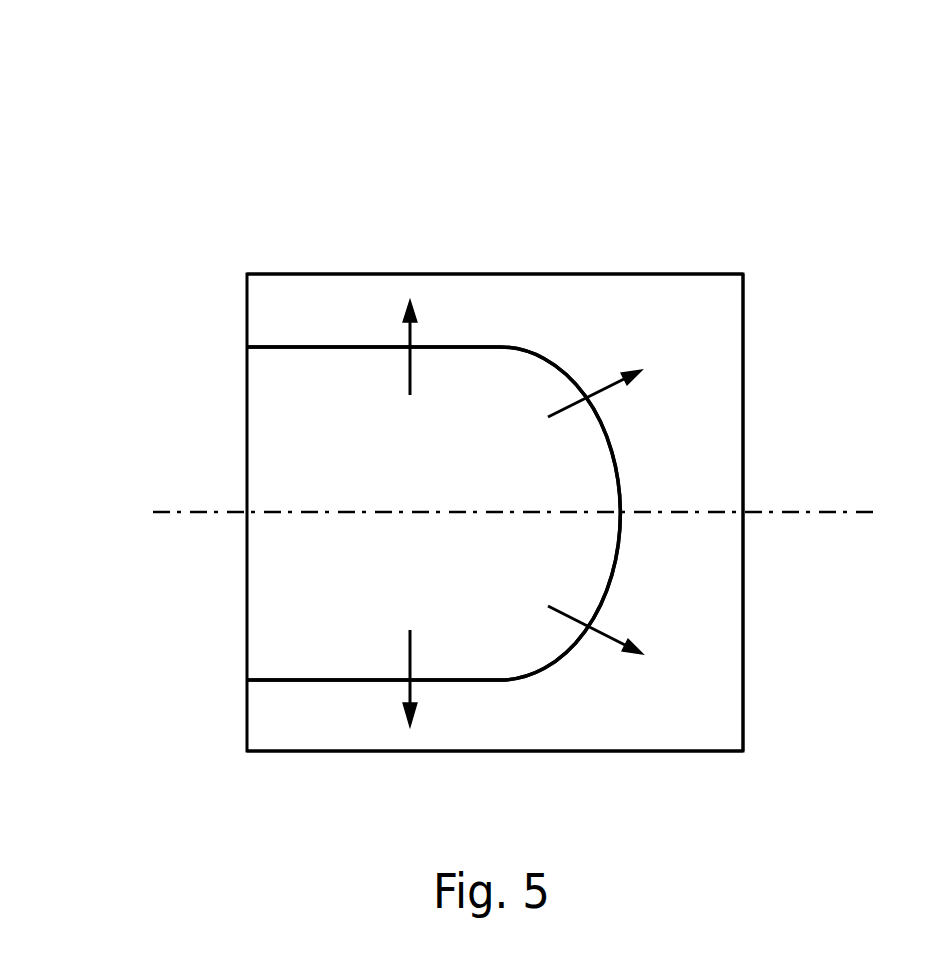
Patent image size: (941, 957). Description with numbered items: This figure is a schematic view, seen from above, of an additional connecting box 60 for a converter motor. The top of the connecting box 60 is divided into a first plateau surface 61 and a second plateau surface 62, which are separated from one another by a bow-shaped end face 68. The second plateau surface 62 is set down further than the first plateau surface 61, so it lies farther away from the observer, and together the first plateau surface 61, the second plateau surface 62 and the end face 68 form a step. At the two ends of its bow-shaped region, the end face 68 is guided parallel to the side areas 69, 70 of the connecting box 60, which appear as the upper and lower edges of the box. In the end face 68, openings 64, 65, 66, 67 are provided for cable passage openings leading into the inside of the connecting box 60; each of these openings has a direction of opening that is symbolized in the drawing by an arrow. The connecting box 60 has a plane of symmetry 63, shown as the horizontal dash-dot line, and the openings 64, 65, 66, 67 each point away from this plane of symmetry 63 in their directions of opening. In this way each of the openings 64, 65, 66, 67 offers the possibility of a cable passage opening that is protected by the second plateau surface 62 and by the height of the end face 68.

The connecting box 60 is at (752, 718).
The first plateau surface 61 is at (573, 583).
The second plateau surface 62 is at (688, 442).
The plane of symmetry 63 is at (700, 510).
The opening 64 is at (642, 370).
The opening 65 is at (612, 634).
The opening 66 is at (412, 347).
The opening 67 is at (415, 680).
The bow-shaped end face 68 is at (610, 435).
The side area 69 is at (368, 274).
The side area 70 is at (408, 751).